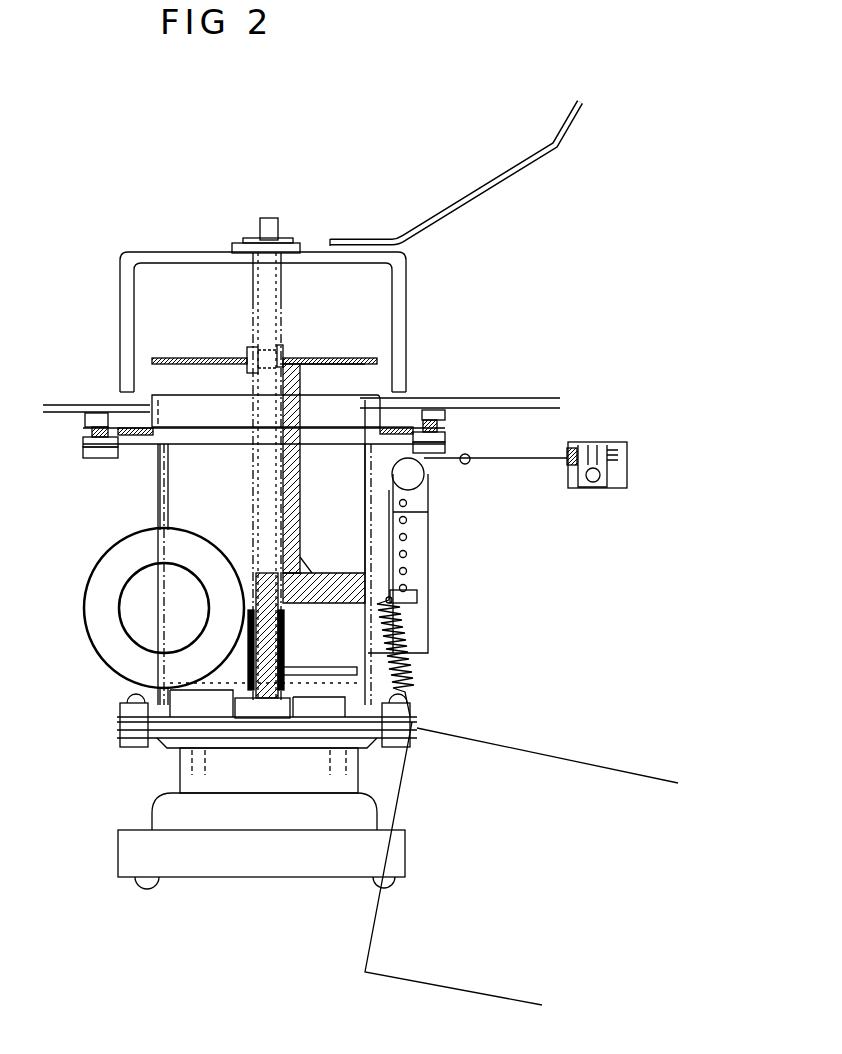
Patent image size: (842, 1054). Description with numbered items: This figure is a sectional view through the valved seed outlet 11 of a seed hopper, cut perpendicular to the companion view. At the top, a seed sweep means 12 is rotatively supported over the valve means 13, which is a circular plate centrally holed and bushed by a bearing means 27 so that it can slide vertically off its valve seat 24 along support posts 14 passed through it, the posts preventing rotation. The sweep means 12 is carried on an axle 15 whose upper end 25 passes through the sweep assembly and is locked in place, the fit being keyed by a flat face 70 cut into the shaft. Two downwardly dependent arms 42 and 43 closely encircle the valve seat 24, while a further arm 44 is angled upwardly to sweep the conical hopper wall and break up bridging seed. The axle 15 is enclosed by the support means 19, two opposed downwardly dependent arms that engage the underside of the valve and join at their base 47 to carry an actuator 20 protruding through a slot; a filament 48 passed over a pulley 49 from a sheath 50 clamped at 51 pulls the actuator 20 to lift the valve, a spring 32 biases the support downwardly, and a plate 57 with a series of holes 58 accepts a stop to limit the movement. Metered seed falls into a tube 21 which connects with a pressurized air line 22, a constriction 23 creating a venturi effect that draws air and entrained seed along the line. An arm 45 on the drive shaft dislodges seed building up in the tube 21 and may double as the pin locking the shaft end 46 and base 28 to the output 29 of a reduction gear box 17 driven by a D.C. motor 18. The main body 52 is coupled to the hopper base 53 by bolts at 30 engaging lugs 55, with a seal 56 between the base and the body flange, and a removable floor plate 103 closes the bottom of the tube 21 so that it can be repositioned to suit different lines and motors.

The valved seed outlet 11 is at (110, 512).
The seed sweep means 12 is at (360, 265).
The valve means 13 is at (364, 358).
The support posts 14 is at (277, 314).
The axle 15 is at (252, 520).
The reduction gear box 17 is at (318, 870).
The drive motor 18 is at (489, 870).
The support means 19 is at (300, 528).
The actuator 20 is at (420, 597).
The tube 21 is at (345, 474).
The line 22 is at (180, 619).
The constriction 23 is at (118, 619).
The valve seat 24 is at (163, 428).
The end of axle 25 is at (292, 222).
The bearing means 27 is at (247, 350).
The base of axle 28 is at (294, 659).
The output of reduction box 29 is at (256, 652).
The bolts 30 is at (72, 452).
The spring 32 is at (405, 676).
The sweep arm 42 is at (120, 334).
The sweep arm 43 is at (424, 357).
The upwardly angled arm 44 is at (535, 170).
The arm 45 is at (337, 658).
The end of drive shaft 46 is at (250, 625).
The base of support arms 47 is at (347, 585).
The filament 48 is at (412, 525).
The pulley 49 is at (413, 478).
The sheath 50 is at (573, 468).
The clamp 51 is at (602, 478).
The main body 52 is at (96, 662).
The base of hopper 53 is at (100, 408).
The lugs 55 is at (130, 445).
The seal 56 is at (405, 405).
The plate 57 is at (415, 550).
The holes 58 is at (413, 575).
The flat face 70 is at (262, 222).
The removable floor plate 103 is at (110, 750).